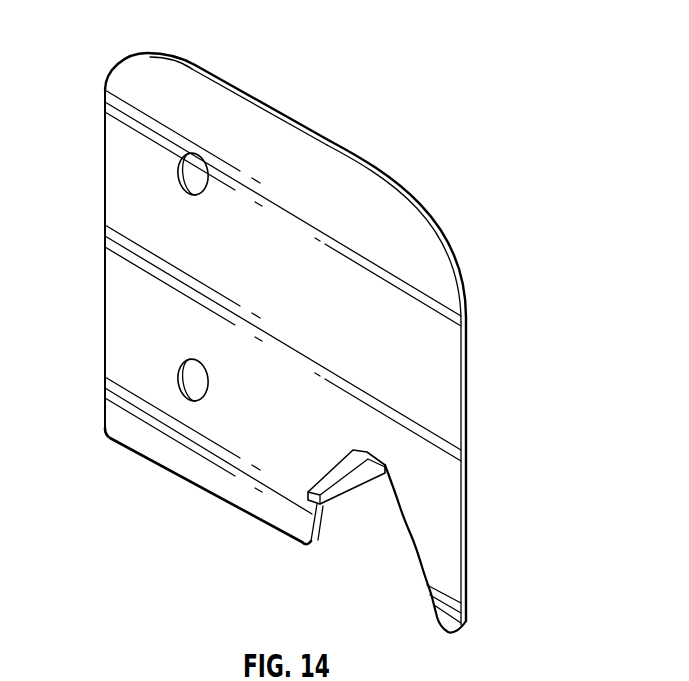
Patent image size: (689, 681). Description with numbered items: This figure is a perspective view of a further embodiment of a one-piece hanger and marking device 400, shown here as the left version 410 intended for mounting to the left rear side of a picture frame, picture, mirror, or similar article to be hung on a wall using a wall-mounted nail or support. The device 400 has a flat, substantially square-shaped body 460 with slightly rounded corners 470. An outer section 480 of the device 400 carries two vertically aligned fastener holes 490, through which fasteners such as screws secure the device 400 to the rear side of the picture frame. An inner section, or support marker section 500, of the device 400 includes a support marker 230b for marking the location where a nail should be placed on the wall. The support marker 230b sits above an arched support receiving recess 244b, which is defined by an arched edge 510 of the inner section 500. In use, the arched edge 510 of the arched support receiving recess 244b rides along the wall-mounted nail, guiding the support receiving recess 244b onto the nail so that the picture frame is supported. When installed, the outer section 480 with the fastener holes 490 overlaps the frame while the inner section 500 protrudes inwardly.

The one-piece hanger and marking device 400 is at (497, 120).
The left version 410 is at (497, 220).
The body 460 is at (297, 119).
The rounded corners 470 is at (134, 55).
The outer section 480 is at (206, 49).
The fastener holes 490 is at (180, 166).
The inner section 500 is at (400, 163).
The arched edge 510 is at (422, 567).
The support marker 230b is at (336, 504).
The arched support receiving recess 244b is at (318, 547).